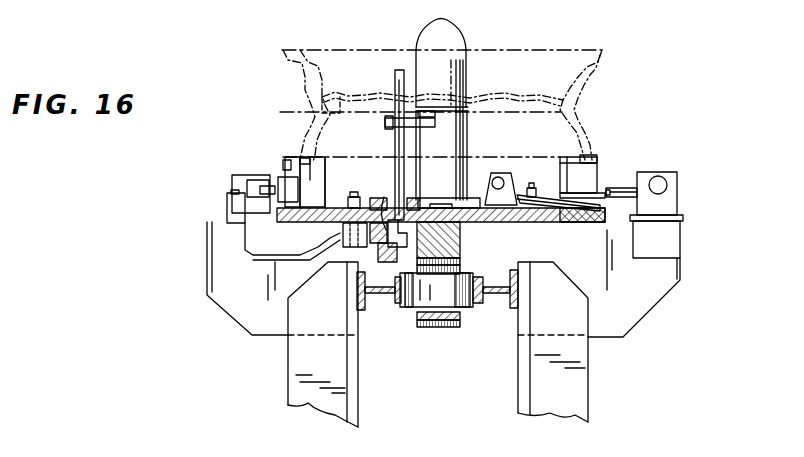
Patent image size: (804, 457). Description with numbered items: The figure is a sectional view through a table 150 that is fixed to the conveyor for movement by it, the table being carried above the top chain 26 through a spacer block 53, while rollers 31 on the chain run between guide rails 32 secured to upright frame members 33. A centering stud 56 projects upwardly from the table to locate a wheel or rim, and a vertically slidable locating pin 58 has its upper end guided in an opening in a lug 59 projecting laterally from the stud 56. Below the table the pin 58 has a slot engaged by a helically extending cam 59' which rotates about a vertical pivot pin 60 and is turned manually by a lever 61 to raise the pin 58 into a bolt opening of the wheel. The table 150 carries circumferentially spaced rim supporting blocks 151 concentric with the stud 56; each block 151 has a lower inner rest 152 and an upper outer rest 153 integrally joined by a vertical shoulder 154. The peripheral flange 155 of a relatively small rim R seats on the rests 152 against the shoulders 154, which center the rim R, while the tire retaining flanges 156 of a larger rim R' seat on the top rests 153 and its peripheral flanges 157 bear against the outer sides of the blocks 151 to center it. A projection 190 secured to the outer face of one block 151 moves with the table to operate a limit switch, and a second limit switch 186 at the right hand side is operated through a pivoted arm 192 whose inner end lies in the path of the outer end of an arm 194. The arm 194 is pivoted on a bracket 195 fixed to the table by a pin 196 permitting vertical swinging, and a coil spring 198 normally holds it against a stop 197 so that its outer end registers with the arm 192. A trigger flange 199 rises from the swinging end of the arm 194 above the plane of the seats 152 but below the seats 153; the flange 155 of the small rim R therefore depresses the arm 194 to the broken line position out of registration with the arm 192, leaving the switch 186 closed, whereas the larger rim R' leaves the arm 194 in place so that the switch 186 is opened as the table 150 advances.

The top chain 26 is at (406, 306).
The rollers 31 is at (470, 275).
The guide rails 32 is at (357, 290).
The upright frame members 33 is at (298, 360).
The spacer block 53 is at (460, 250).
The centering stud 56 is at (468, 160).
The locating pin 58 is at (397, 85).
The lug 59 is at (388, 126).
The helically extending cam 59' is at (387, 218).
The pivot pin 60 is at (342, 240).
The lever 61 is at (260, 254).
The table 150 is at (575, 219).
The rim supporting blocks 151 is at (318, 195).
The inner rests 152 is at (320, 170).
The outer rests 153 is at (283, 155).
The vertical shoulder 154 is at (303, 135).
The peripheral flange 155 is at (302, 191).
The tire retaining flanges 156 is at (293, 72).
The peripheral flanges 157 is at (283, 162).
The limit switch 186 is at (672, 198).
The projection 190 is at (236, 196).
The arm 192 is at (650, 172).
The arm 194 is at (612, 188).
The bracket 195 is at (512, 180).
The pin 196 is at (500, 178).
The stop 197 is at (534, 186).
The coil spring 198 is at (537, 219).
The flange 199 is at (598, 224).
The rim R is at (423, 96).
The rim R' is at (588, 105).